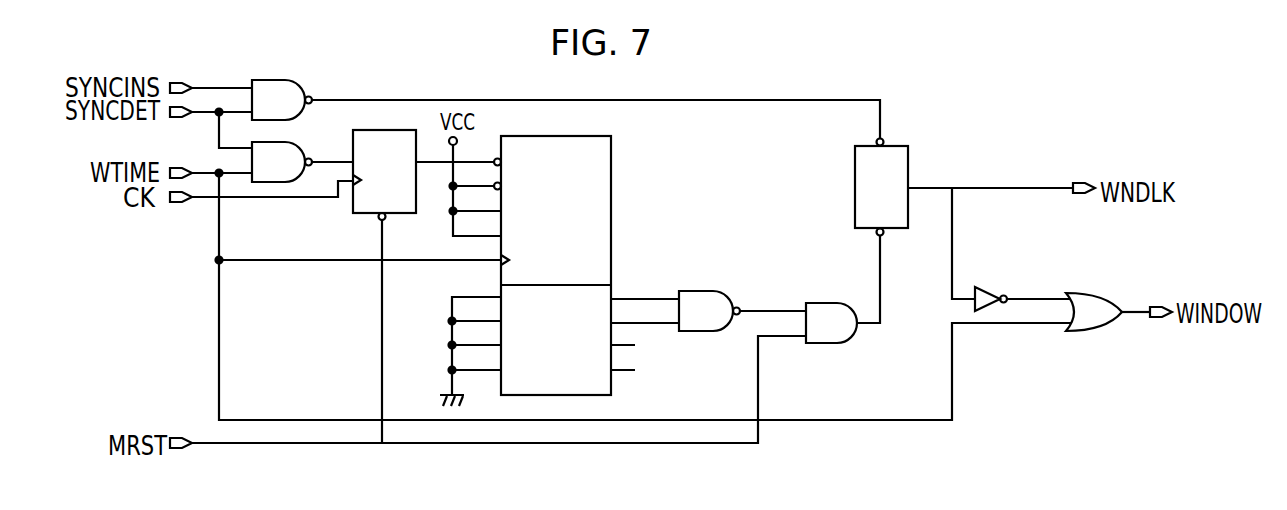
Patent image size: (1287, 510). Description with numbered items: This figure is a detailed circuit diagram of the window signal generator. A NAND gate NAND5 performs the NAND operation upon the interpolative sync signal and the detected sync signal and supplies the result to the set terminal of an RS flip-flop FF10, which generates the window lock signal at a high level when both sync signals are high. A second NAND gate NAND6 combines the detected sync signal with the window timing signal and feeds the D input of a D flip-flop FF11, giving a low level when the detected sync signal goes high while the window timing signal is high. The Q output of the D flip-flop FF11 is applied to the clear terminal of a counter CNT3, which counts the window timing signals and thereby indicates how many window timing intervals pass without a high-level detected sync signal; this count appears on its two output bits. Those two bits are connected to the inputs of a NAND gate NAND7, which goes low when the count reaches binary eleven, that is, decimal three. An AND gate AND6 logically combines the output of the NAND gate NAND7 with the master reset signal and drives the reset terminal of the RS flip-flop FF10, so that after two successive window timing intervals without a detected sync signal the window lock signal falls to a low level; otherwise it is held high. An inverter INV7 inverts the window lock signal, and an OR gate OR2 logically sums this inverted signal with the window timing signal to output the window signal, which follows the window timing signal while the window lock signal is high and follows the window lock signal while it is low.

The NAND gate NAND5 is at (296, 80).
The NAND gate NAND6 is at (290, 184).
The D flip-flop FF11 is at (352, 148).
The counter CNT3 is at (613, 160).
The NAND gate NAND7 is at (722, 291).
The AND gate AND6 is at (833, 303).
The RS flip-flop FF10 is at (908, 155).
The inverter INV7 is at (991, 287).
The OR gate OR2 is at (1090, 293).